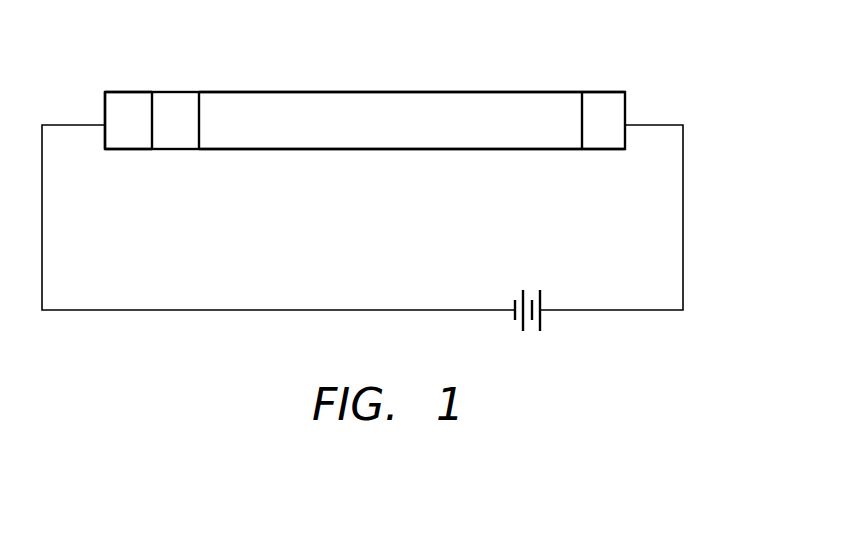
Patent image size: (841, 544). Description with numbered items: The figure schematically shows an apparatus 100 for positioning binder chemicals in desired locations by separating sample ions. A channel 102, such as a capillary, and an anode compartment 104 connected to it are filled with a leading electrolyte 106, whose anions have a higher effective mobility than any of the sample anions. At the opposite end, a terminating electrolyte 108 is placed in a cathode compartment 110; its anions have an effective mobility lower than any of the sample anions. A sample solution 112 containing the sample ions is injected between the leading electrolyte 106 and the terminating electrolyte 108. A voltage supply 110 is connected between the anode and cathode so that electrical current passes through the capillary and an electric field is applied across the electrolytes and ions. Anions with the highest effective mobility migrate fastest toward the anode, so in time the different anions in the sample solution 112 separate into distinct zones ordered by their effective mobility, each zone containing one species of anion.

The apparatus 100 is at (688, 383).
The channel 102 is at (468, 92).
The anode compartment 104 is at (607, 92).
The leading electrolyte 106 is at (387, 107).
The terminating electrolyte 108 is at (133, 107).
The cathode compartment 110 is at (120, 92).
The sample solution 112 is at (175, 112).